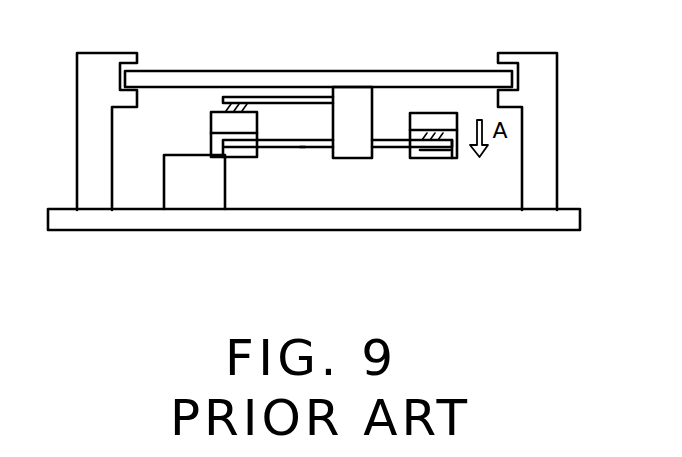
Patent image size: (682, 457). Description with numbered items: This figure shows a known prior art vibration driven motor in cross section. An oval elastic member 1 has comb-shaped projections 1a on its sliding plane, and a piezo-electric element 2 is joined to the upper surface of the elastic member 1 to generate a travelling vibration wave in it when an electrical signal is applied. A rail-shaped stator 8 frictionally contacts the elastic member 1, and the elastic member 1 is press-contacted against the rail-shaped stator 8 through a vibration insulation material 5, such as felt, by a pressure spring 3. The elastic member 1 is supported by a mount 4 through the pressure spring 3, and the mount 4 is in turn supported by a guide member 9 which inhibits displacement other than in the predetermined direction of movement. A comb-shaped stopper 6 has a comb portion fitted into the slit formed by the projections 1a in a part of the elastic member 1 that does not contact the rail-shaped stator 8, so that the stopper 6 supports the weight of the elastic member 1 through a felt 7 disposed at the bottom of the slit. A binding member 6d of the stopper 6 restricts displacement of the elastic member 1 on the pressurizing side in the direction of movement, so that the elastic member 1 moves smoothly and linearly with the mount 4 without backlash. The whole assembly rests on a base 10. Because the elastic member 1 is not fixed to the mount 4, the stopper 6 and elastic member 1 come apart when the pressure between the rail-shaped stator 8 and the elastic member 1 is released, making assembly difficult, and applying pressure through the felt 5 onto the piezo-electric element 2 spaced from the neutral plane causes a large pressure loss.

The elastic member 1 is at (213, 122).
The comb-shaped projections 1a is at (245, 155).
The piezo-electric element 2 is at (421, 112).
The pressure spring 3 is at (277, 100).
The mount 4 is at (333, 80).
The vibration insulation material 5 is at (224, 107).
The comb-shaped stopper 6 is at (390, 152).
The binding member 6d is at (300, 147).
The felt 7 is at (427, 150).
The rail-shaped stator 8 is at (197, 200).
The guide member 9 is at (86, 128).
The base plate 10 is at (508, 220).